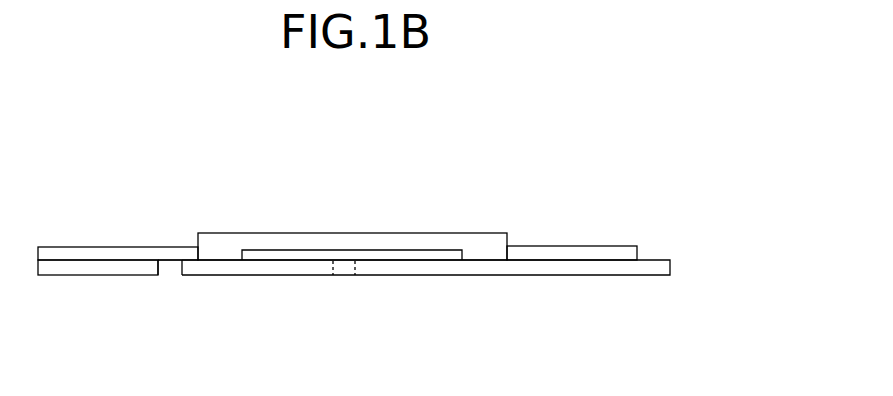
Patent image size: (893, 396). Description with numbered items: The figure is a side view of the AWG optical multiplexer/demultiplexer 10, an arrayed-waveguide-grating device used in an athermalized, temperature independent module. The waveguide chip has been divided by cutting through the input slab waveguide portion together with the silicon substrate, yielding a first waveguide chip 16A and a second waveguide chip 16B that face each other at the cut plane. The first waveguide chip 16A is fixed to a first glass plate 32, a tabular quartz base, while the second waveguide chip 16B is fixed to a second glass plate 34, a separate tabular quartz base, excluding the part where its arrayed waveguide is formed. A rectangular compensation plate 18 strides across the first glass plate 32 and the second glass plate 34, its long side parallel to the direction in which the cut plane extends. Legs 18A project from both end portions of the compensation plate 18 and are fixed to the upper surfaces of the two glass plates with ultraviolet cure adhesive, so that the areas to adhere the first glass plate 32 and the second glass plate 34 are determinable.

The AWG optical multiplexer/demultiplexer 10 is at (617, 178).
The first waveguide chip 16A is at (132, 247).
The second waveguide chip 16B is at (557, 244).
The compensation plate 18 is at (362, 233).
The legs 18A is at (223, 262).
The first glass plate 32 is at (102, 275).
The second glass plate 34 is at (580, 275).